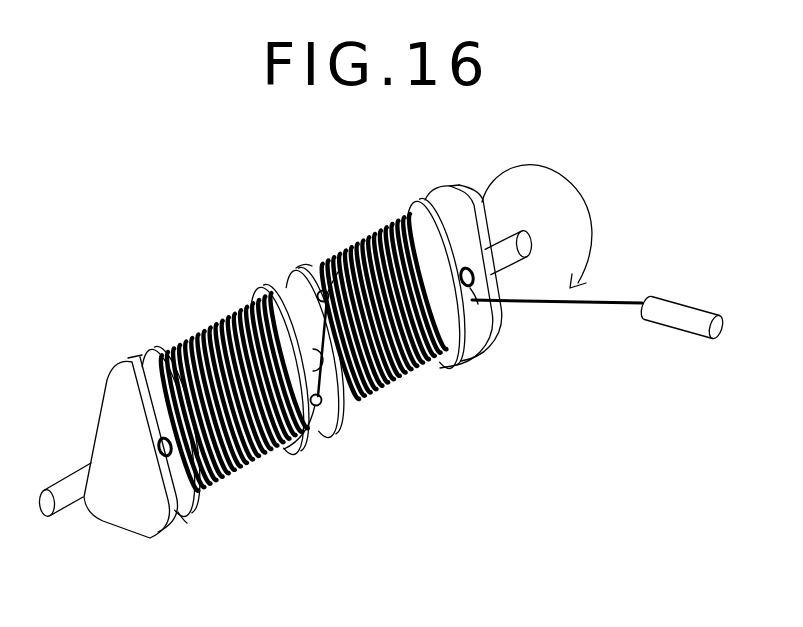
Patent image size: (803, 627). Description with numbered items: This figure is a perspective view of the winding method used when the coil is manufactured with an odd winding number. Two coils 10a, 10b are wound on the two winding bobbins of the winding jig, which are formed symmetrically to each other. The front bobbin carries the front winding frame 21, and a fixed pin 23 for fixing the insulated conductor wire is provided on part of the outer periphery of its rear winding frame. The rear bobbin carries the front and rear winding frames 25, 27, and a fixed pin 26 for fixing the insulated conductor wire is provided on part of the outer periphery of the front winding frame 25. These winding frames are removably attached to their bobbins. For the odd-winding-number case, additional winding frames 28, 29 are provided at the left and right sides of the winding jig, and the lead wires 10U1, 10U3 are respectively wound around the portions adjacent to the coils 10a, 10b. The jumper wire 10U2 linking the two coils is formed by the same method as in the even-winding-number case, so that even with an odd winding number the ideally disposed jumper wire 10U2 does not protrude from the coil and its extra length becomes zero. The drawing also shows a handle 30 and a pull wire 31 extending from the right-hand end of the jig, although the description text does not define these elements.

The coil 10a is at (207, 337).
The coil 10b is at (371, 238).
The lead wire 10U1 is at (183, 522).
The jumper wire 10U2 is at (332, 430).
The lead wire 10U3 is at (478, 305).
The front winding frame 21 is at (145, 354).
The fixed pin 23 is at (310, 440).
The front winding frame 25 is at (260, 290).
The fixed pin 26 is at (326, 266).
The rear winding frame 27 is at (427, 199).
The winding frame 28 is at (121, 366).
The winding frame 29 is at (455, 188).
The handle 30 is at (694, 304).
The pull wire 31 is at (602, 302).